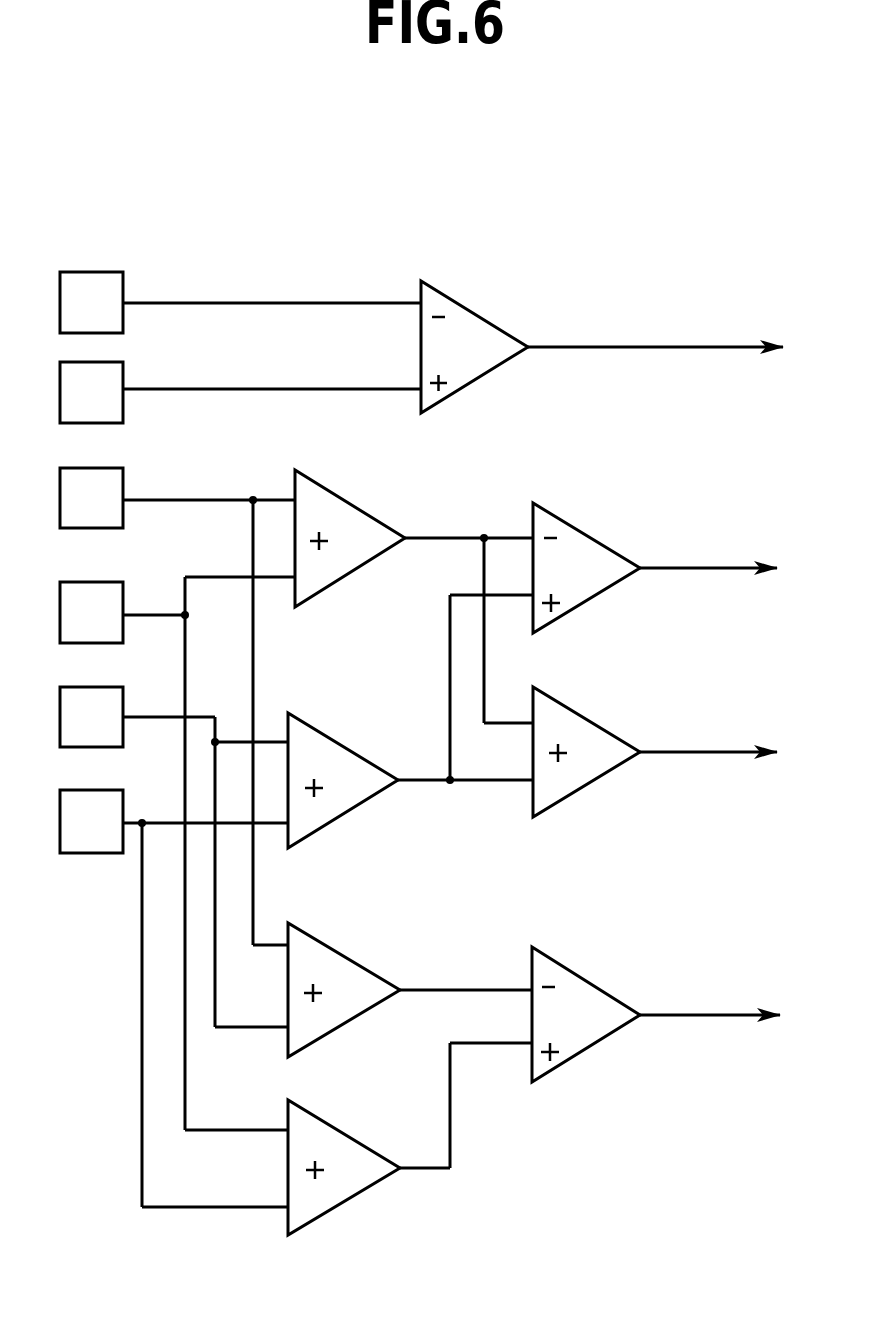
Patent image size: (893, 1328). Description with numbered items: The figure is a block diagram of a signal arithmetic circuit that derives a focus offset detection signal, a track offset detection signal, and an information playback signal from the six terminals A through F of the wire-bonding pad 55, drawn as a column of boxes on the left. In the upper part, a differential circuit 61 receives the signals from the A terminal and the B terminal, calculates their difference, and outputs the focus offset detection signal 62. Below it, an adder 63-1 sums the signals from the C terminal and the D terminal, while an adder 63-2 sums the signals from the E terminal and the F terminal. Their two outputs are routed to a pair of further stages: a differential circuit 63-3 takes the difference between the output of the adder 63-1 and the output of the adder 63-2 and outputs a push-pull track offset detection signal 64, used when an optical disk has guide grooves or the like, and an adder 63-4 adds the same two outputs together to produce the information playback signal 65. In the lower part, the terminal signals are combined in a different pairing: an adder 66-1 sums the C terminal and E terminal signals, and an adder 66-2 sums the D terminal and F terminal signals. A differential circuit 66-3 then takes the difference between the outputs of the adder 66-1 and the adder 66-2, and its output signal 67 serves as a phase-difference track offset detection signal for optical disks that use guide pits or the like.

The wire-bonding pad 55 is at (84, 271).
The differential circuit 61 is at (470, 308).
The focus offset detection signal 62 is at (648, 347).
The adder 63-1 is at (372, 516).
The adder 63-2 is at (362, 806).
The differential circuit 63-3 is at (595, 540).
The adder 63-4 is at (600, 725).
The push-pull track offset detection signal 64 is at (667, 572).
The information playback signal 65 is at (665, 757).
The adder 66-1 is at (360, 965).
The adder 66-2 is at (360, 1195).
The differential circuit 66-3 is at (593, 982).
The output signal 67 is at (668, 1018).